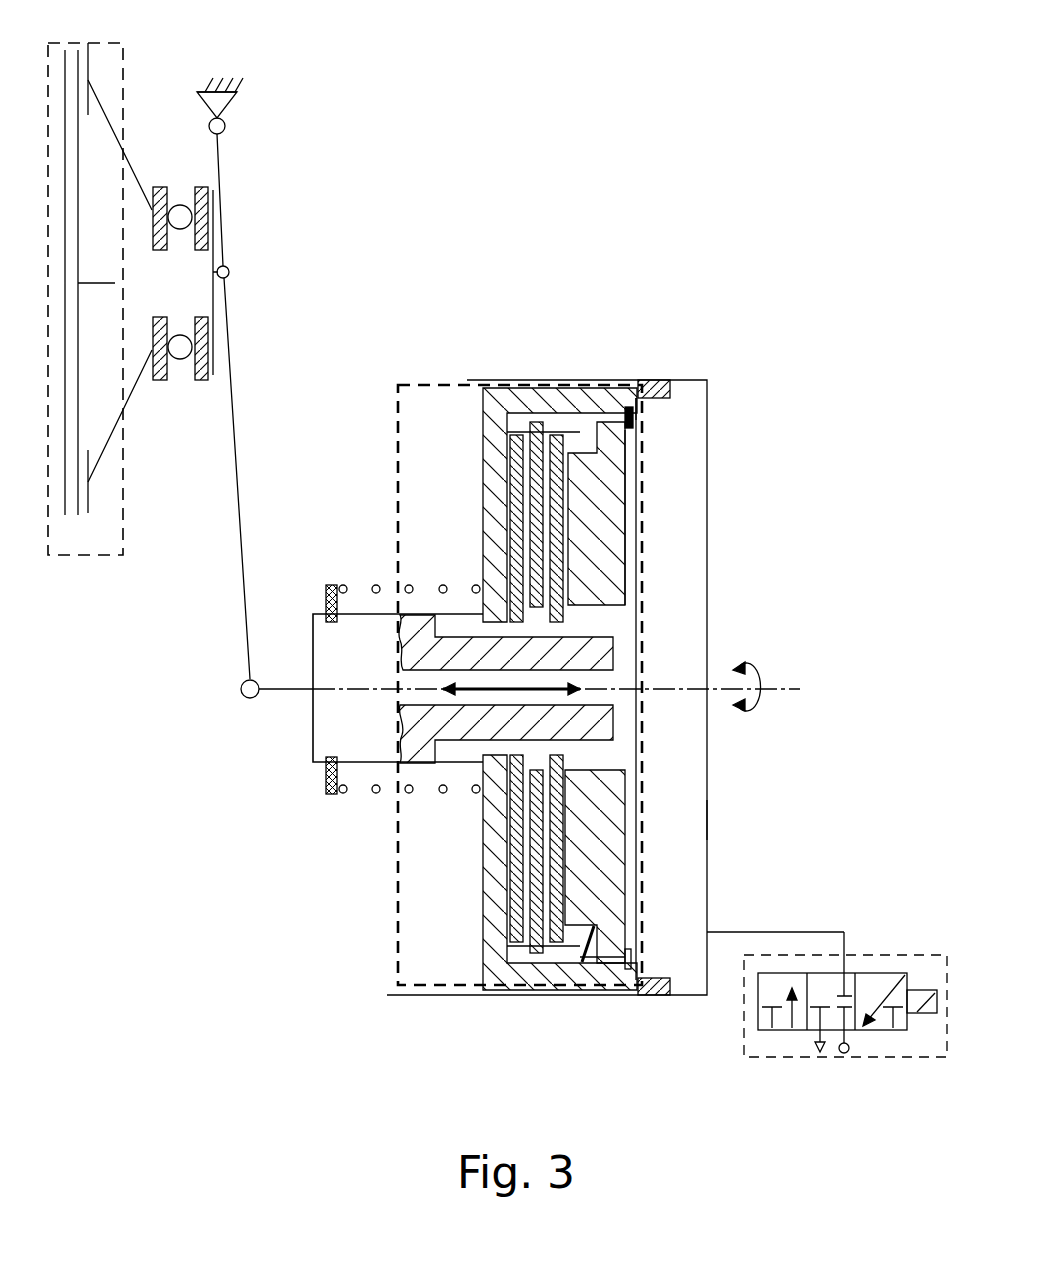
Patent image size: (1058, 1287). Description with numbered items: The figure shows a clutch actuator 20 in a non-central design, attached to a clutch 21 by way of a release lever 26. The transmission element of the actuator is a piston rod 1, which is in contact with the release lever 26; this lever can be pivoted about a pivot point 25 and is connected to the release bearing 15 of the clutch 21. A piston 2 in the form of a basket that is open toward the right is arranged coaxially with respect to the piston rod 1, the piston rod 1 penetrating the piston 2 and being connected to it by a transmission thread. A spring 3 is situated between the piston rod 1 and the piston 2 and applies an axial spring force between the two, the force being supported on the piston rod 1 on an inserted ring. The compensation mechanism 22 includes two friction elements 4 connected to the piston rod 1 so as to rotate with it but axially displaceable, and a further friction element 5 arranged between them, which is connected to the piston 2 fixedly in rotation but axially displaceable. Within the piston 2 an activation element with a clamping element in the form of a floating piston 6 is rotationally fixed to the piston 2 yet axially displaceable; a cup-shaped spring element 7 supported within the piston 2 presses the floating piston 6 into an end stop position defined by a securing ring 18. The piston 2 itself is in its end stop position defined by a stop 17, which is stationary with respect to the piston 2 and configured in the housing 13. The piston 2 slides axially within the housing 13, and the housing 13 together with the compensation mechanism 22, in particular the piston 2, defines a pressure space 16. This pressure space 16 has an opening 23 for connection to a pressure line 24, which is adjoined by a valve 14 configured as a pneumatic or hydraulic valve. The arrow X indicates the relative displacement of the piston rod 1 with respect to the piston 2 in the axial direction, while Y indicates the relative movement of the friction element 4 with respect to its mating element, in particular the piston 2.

The piston rod 1 is at (377, 752).
The piston 2 is at (593, 447).
The spring 3 is at (373, 583).
The friction element 4 is at (483, 386).
The friction element 5 is at (538, 420).
The floating piston 6 is at (613, 468).
The spring element 7 is at (583, 963).
The housing 13 is at (705, 823).
The valve 14 is at (893, 953).
The release bearing 15 is at (183, 162).
The pressure space 16 is at (670, 577).
The stop 17 is at (673, 388).
The securing ring 18 is at (631, 957).
The clutch actuator 20 is at (575, 270).
The clutch 21 is at (93, 557).
The compensation mechanism 22 is at (420, 383).
The opening 23 is at (707, 918).
The pressure line 24 is at (790, 932).
The pivot point 25 is at (227, 118).
The release lever 26 is at (233, 432).
The relative displacement X is at (485, 692).
The relative movement Y is at (758, 707).